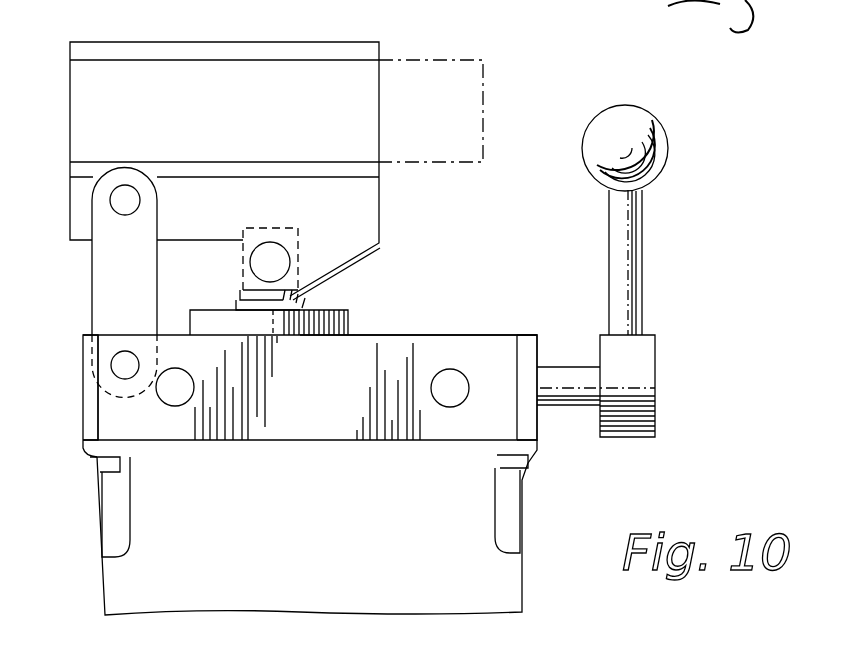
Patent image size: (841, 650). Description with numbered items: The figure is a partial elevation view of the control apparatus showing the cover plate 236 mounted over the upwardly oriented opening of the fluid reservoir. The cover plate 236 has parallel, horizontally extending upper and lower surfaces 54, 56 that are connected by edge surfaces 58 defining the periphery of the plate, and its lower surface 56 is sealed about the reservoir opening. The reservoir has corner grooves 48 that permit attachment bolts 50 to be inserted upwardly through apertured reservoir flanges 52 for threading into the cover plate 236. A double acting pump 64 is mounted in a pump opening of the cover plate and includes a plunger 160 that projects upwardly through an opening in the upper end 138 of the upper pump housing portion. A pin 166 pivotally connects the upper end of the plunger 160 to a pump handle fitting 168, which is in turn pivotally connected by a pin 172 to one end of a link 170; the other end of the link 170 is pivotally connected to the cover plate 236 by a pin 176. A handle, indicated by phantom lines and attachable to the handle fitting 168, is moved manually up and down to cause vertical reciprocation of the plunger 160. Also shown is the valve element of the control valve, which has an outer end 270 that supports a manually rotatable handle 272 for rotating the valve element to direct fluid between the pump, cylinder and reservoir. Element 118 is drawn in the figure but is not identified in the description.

The slide member 118 is at (410, 70).
The pump handle fitting 168 is at (342, 197).
The pin 172 is at (125, 198).
The link 170 is at (110, 282).
The pin 166 is at (270, 258).
The plunger 160 is at (305, 290).
The upper end of the upper pump housing portion 138 is at (215, 313).
The pump 64 is at (332, 308).
The upper surface 54 is at (373, 333).
The cover plate 236 is at (457, 333).
The edge surfaces 58 is at (480, 348).
The lower surface 56 is at (345, 442).
The pin 176 is at (122, 362).
The reservoir flanges 52 is at (93, 448).
The attachment bolts 50 is at (100, 463).
The corner grooves 48 is at (110, 522).
The manually rotatable handle 272 is at (632, 227).
The outer end of the valve element 270 is at (578, 395).